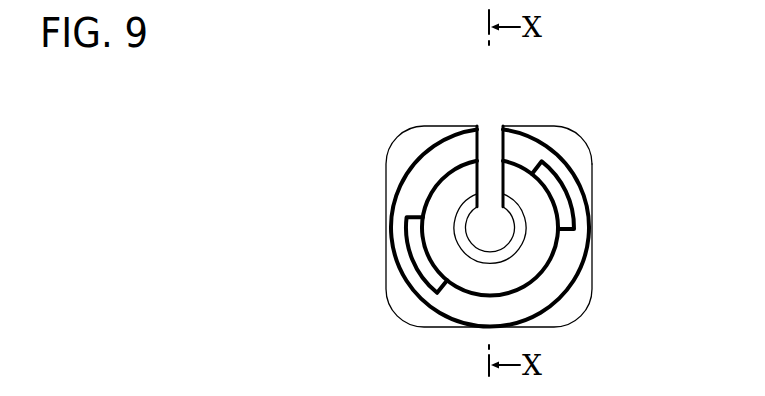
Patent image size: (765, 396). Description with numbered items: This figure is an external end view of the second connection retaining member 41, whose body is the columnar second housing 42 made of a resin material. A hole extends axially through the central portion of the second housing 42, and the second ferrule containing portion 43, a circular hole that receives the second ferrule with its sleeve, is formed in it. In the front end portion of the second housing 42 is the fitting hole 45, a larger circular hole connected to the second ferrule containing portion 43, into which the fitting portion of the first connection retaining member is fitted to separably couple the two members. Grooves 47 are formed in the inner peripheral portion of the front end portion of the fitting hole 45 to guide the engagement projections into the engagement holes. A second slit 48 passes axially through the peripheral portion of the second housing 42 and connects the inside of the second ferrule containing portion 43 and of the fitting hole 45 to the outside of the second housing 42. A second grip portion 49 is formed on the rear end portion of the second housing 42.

The second connection retaining member 41 is at (394, 116).
The second housing 42 is at (387, 168).
The second ferrule containing portion 43 is at (492, 245).
The fitting hole 45 is at (488, 279).
The grooves 47 is at (419, 262).
The second slit 48 is at (478, 143).
The second grip portion 49 is at (574, 133).